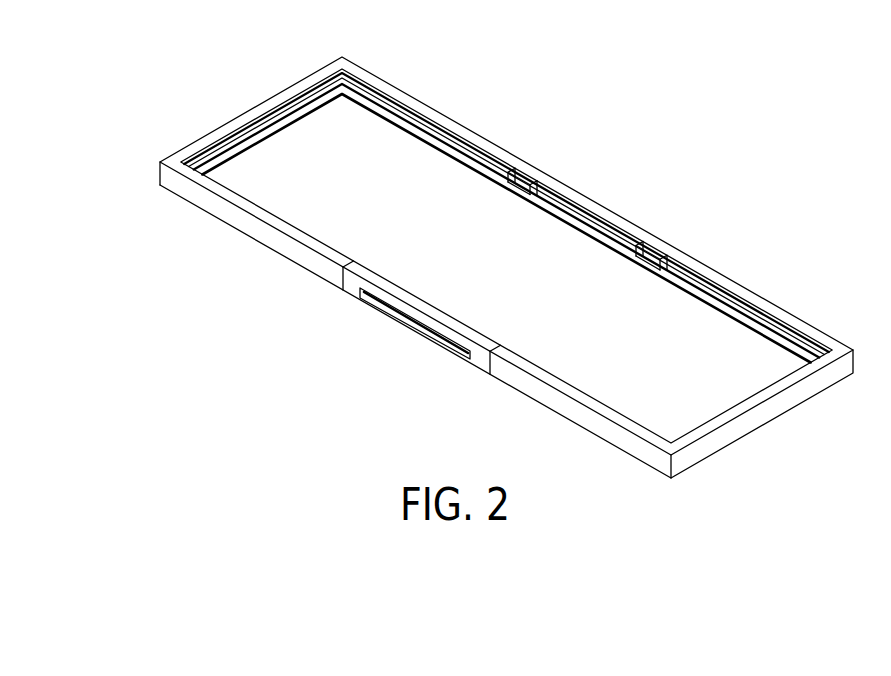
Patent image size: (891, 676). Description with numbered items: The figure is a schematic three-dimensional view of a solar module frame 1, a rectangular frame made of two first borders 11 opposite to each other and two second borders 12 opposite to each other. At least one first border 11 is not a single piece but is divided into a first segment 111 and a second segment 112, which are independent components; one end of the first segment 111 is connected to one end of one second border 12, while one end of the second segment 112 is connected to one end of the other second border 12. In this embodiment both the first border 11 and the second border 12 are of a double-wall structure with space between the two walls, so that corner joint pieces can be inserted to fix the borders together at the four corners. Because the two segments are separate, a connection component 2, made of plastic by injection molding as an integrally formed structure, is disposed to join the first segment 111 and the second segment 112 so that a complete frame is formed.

The solar module frame 1 is at (456, 257).
The first border 11 is at (506, 203).
The first segment 111 is at (445, 122).
The second segment 112 is at (506, 221).
The second border 12 is at (765, 415).
The connection component 2 is at (348, 283).